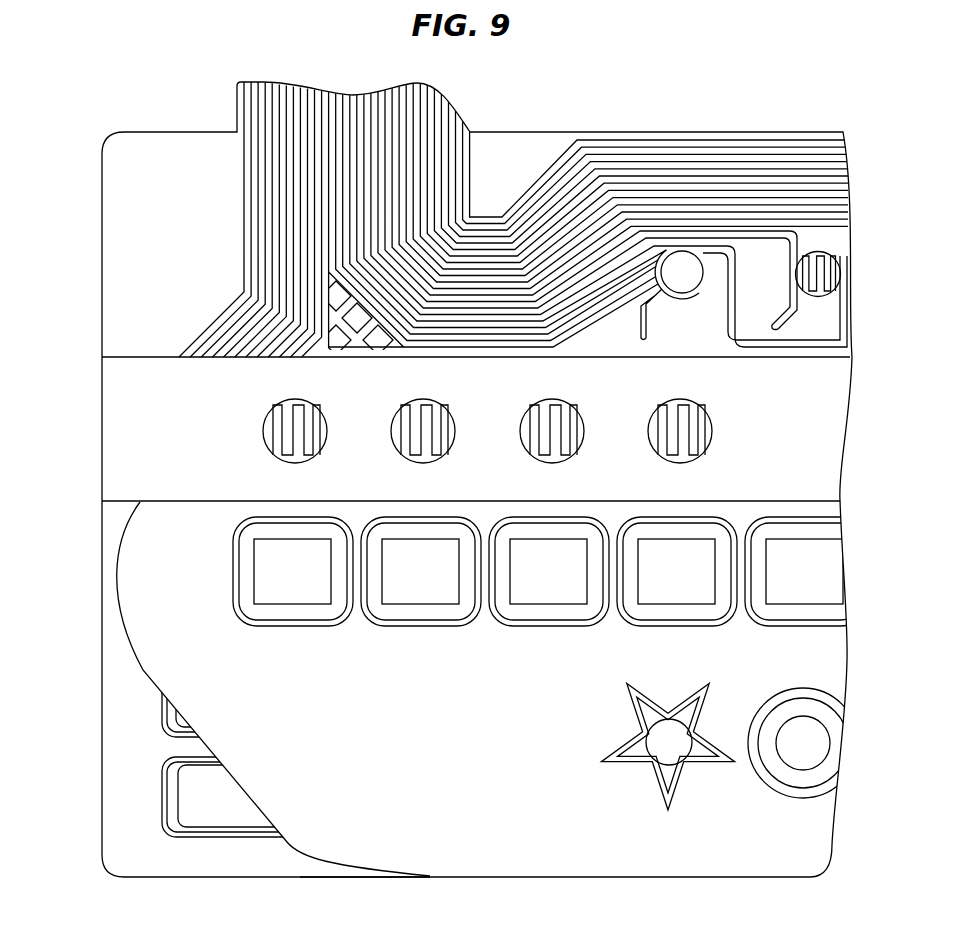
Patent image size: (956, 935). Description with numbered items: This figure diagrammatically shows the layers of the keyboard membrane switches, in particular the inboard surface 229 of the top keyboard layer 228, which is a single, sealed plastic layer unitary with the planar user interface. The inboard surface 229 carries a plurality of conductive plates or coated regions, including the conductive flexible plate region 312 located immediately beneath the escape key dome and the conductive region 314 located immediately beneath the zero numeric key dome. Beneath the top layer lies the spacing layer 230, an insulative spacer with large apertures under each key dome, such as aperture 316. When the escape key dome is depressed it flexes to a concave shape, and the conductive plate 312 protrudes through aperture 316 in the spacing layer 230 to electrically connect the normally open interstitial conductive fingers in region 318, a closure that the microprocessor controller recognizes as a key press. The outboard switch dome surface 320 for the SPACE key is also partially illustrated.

The spacing layer 230 is at (115, 443).
The aperture 316 is at (294, 405).
The key junction region 318 is at (300, 432).
The conductive flexible plate region 312 is at (294, 595).
The conductive region 314 is at (428, 597).
The outboard switch dome surface 320 is at (178, 838).
The top keyboard layer 228 is at (297, 847).
The inboard surface 229 is at (362, 838).